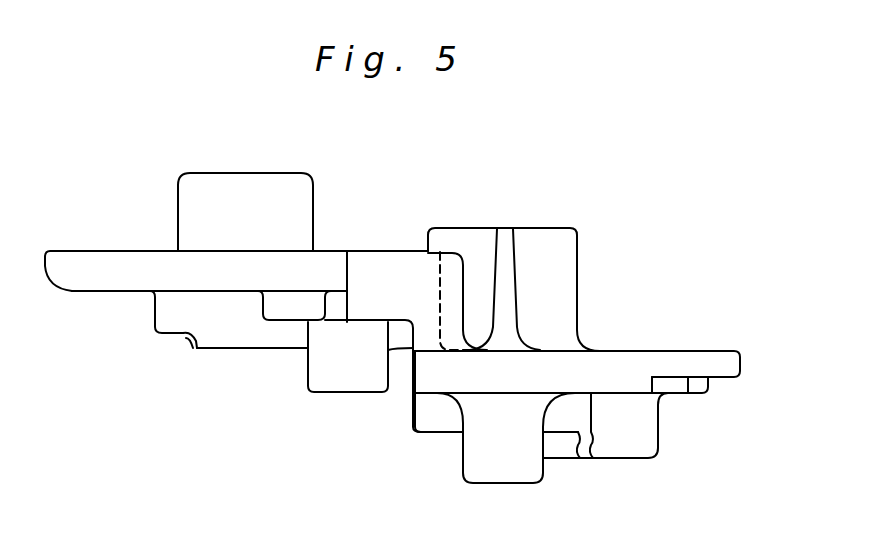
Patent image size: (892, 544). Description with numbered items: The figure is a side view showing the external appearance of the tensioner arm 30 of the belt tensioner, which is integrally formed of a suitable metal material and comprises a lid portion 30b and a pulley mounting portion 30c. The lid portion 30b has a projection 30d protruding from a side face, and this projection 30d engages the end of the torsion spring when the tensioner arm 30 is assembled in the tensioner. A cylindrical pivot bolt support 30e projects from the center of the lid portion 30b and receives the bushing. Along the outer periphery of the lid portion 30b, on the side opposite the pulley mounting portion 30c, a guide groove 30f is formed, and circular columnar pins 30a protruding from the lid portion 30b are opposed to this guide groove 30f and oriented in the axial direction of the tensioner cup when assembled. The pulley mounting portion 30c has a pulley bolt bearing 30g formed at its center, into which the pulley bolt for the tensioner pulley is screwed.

The tensioner arm 30 is at (398, 176).
The circular columnar pins 30a is at (347, 378).
The lid portion 30b is at (663, 351).
The pulley mounting portion 30c is at (92, 249).
The projection 30d is at (642, 442).
The cylindrical pivot bolt support 30e is at (557, 272).
The guide groove 30f is at (688, 393).
The pulley bolt bearing 30g is at (221, 192).